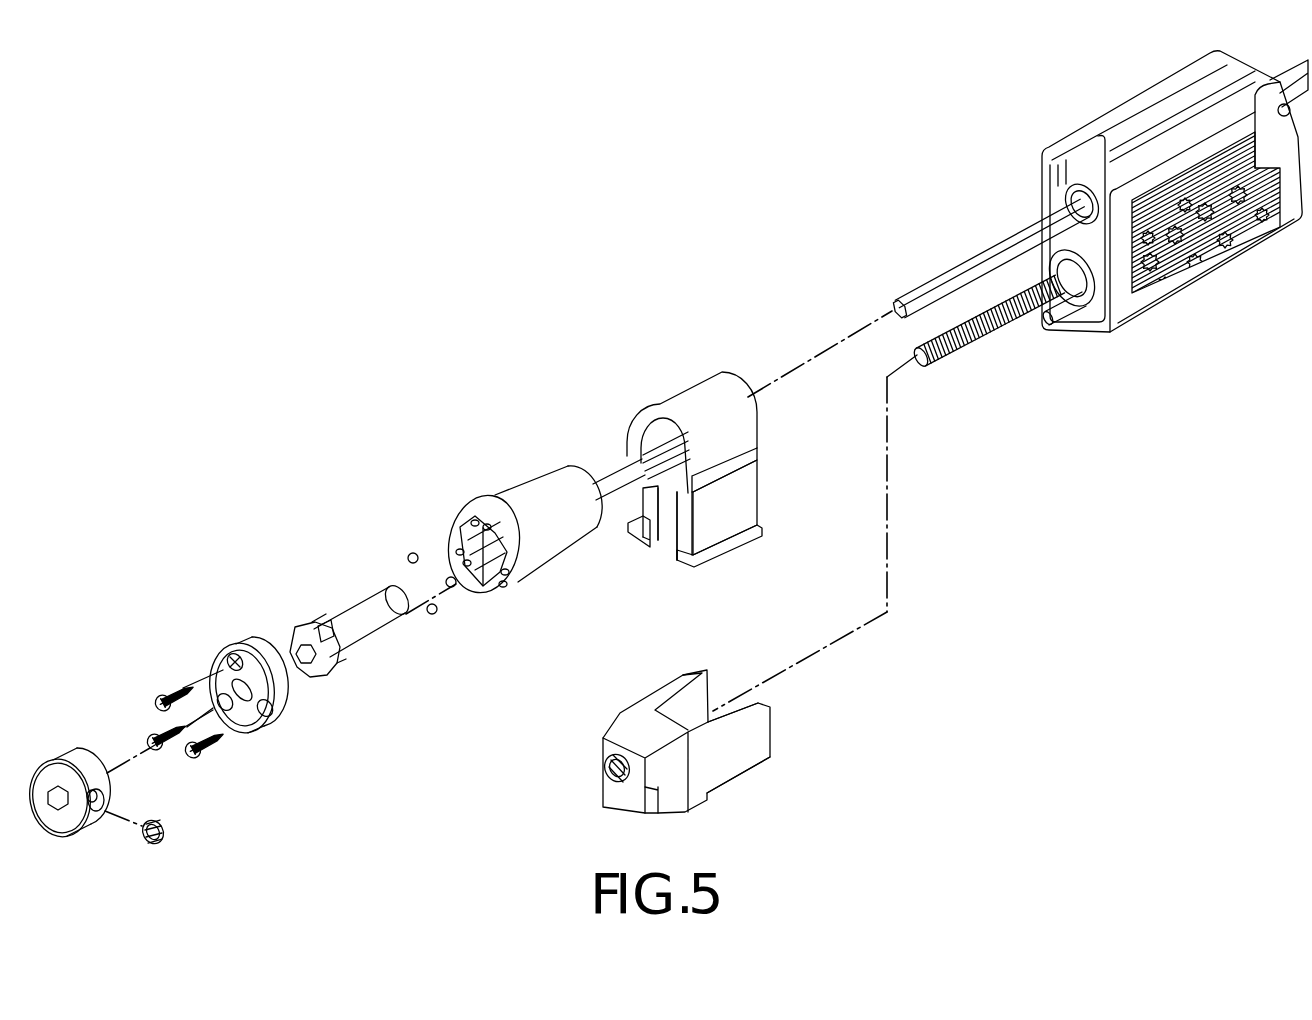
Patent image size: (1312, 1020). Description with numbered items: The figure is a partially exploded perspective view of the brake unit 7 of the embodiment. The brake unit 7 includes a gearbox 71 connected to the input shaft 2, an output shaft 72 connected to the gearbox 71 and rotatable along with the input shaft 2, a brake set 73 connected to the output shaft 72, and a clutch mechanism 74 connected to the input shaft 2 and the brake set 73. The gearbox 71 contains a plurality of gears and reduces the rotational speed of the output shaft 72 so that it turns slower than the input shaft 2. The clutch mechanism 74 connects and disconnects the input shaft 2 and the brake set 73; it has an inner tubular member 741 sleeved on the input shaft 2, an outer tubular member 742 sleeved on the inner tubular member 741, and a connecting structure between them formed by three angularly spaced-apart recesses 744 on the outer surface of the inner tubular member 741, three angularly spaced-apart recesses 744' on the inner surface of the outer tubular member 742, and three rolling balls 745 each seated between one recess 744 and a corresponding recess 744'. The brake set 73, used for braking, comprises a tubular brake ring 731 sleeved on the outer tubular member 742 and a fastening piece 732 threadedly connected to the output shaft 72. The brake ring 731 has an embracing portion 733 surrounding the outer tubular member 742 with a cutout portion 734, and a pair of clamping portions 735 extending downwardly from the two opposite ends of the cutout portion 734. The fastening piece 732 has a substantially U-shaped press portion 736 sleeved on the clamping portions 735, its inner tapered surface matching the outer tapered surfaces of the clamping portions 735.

The input shaft 2 is at (946, 262).
The brake unit 7 is at (410, 343).
The gearbox 71 is at (1073, 128).
The output shaft 72 is at (986, 342).
The brake set 73 is at (709, 446).
The tubular brake ring 731 is at (709, 446).
The fastening piece 732 is at (733, 741).
The embracing portion 733 is at (718, 390).
The cutout portion 734 is at (662, 494).
The clamping portions 735 is at (640, 502).
The press portion 736 is at (737, 745).
The clutch mechanism 74 is at (340, 578).
The inner tubular member 741 is at (363, 619).
The outer tubular member 742 is at (543, 526).
The recesses 744 is at (307, 610).
The recesses 744' is at (487, 600).
The rolling balls 745 is at (414, 553).